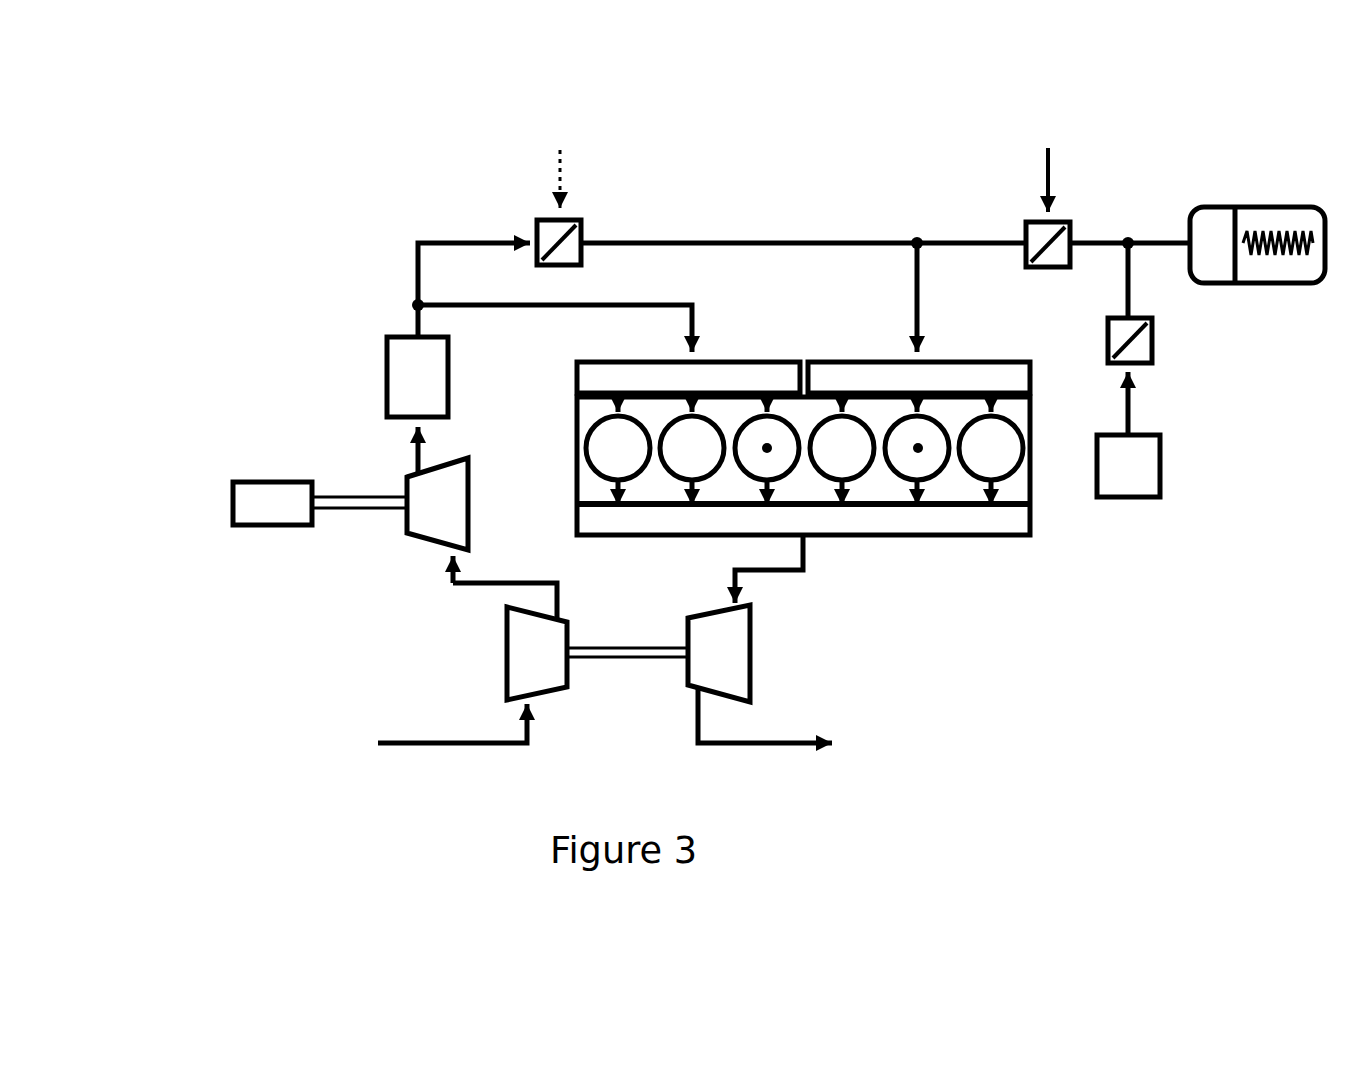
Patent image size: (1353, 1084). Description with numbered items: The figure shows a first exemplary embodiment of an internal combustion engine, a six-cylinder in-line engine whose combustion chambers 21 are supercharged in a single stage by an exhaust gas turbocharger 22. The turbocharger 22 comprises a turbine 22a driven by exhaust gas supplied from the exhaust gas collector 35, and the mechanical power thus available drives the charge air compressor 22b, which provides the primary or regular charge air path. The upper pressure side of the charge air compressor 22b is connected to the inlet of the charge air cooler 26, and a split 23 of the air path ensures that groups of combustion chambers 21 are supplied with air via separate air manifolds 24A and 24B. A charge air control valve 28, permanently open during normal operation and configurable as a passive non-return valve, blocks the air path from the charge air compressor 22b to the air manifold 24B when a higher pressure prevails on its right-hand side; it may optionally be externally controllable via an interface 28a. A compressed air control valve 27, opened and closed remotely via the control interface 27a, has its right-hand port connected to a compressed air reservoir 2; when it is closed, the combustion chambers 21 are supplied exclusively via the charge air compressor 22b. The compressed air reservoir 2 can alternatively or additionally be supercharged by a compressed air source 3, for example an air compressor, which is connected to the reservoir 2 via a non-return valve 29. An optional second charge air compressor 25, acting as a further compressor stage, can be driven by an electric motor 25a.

The compressed air reservoir 2 is at (1252, 198).
The compressed air source 3 is at (1170, 481).
The combustion chambers 21 is at (767, 448).
The exhaust gas turbocharger 22 is at (575, 639).
The turbine 22a is at (719, 653).
The charge air compressor 22b is at (537, 653).
The split of the air path 23 is at (388, 288).
The air manifold 24A is at (688, 377).
The air manifold 24B is at (919, 377).
The second charge air compressor 25 is at (396, 524).
The electric motor 25a is at (226, 499).
The charge air cooler 26 is at (380, 380).
The compressed air control valve 27 is at (1020, 211).
The control interface 27a is at (1052, 168).
The charge air control valve 28 is at (530, 217).
The interface 28a is at (562, 167).
The non-return valve 29 is at (1158, 342).
The exhaust gas collector 35 is at (803, 517).